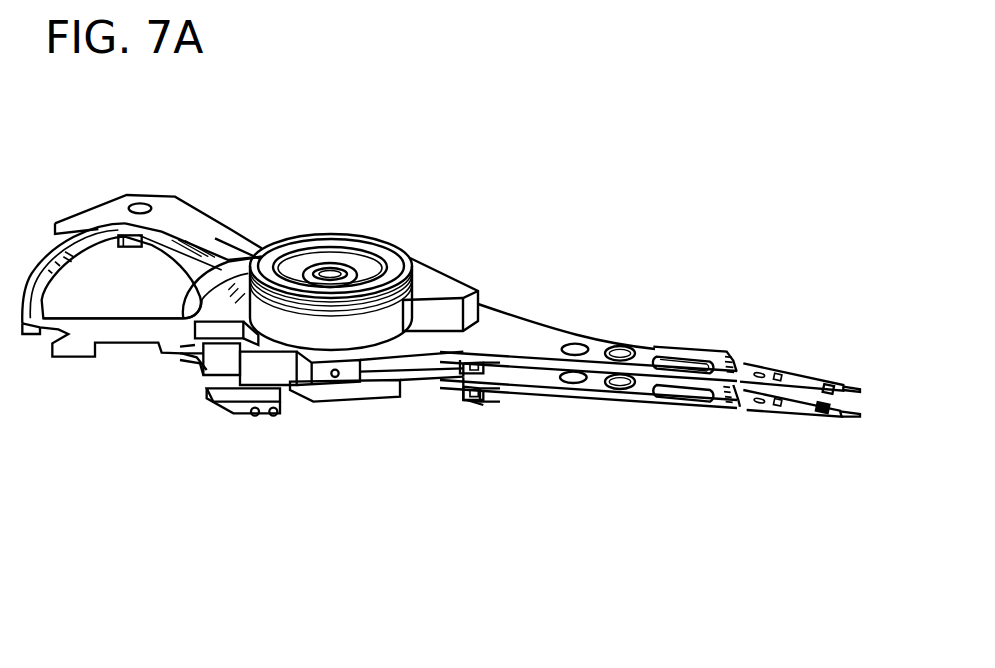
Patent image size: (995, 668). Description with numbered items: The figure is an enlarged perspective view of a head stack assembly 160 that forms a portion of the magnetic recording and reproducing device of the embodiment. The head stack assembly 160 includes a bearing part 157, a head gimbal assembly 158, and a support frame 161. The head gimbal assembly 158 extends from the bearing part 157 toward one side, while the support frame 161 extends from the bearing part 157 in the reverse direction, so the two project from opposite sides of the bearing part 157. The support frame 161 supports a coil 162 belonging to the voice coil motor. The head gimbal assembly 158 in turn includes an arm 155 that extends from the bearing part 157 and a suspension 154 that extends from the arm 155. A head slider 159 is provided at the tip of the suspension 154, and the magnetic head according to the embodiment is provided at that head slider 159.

The suspension 154 is at (795, 377).
The arm 155 is at (645, 352).
The bearing part 157 is at (348, 212).
The head gimbal assembly 158 is at (577, 307).
The head slider 159 is at (833, 383).
The head stack assembly 160 is at (538, 232).
The support frame 161 is at (175, 215).
The coil 162 is at (106, 320).